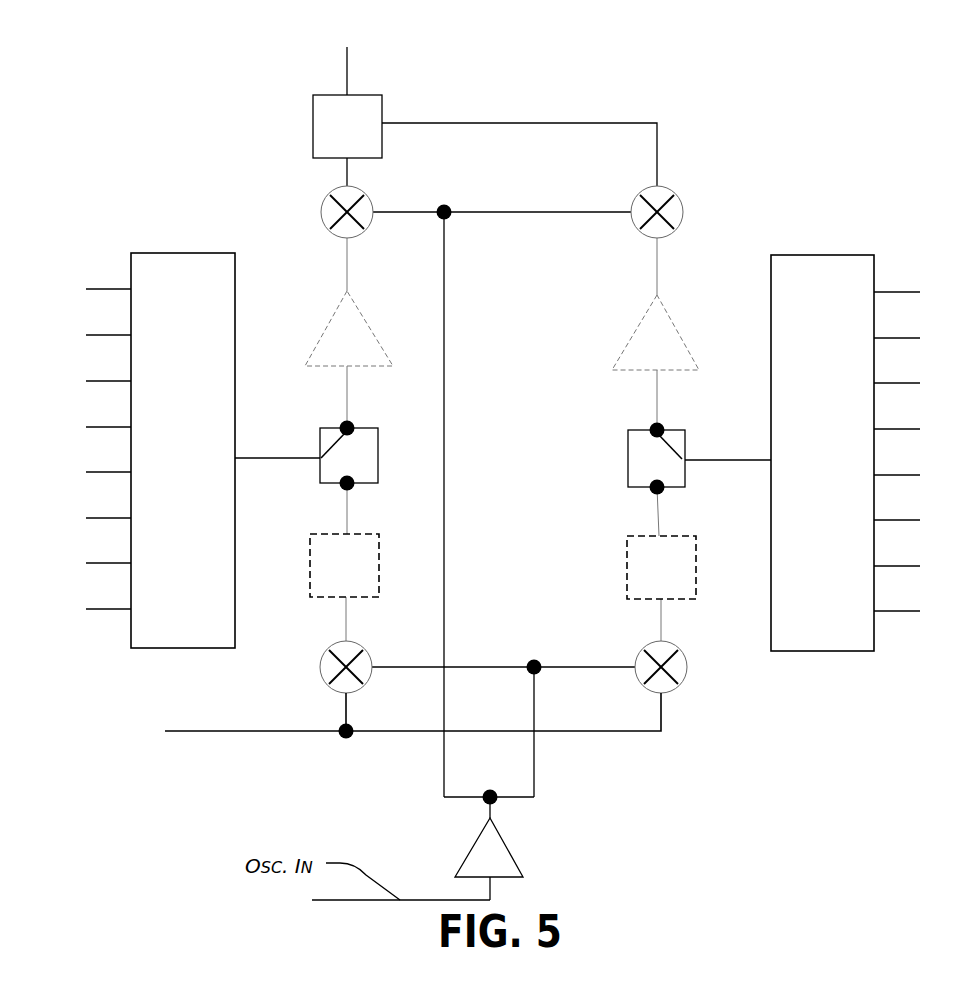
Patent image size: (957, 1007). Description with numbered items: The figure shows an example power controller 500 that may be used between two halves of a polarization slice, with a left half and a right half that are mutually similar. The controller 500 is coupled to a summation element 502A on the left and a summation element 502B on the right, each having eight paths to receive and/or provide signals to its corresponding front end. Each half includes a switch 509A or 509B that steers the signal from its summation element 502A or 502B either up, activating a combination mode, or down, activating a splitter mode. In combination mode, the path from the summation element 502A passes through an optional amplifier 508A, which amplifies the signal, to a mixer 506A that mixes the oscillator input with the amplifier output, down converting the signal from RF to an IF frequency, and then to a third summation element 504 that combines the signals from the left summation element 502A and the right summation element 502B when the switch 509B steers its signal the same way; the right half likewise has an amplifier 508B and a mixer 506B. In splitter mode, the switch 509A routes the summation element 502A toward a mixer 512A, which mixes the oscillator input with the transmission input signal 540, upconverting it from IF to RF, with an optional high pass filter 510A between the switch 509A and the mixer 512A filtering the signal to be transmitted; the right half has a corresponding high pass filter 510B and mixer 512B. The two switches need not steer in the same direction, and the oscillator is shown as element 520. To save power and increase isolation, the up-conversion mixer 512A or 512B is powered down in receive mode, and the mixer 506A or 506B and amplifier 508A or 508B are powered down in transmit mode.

The controller 500 is at (114, 68).
The summation element 502A is at (160, 450).
The summation element 502B is at (845, 453).
The third summation element 504 is at (347, 126).
The mixer 506A is at (332, 233).
The mixer 506B is at (675, 233).
The amplifier 508A is at (349, 328).
The amplifier 508B is at (655, 332).
The switch 509A is at (335, 423).
The switch 509B is at (671, 431).
The high pass filter 510A is at (344, 565).
The high pass filter 510B is at (661, 567).
The mixer 512A is at (332, 641).
The mixer 512B is at (677, 646).
The oscillator amplifier / RX output 520 is at (347, 70).
The transmission input signal 540 is at (195, 730).